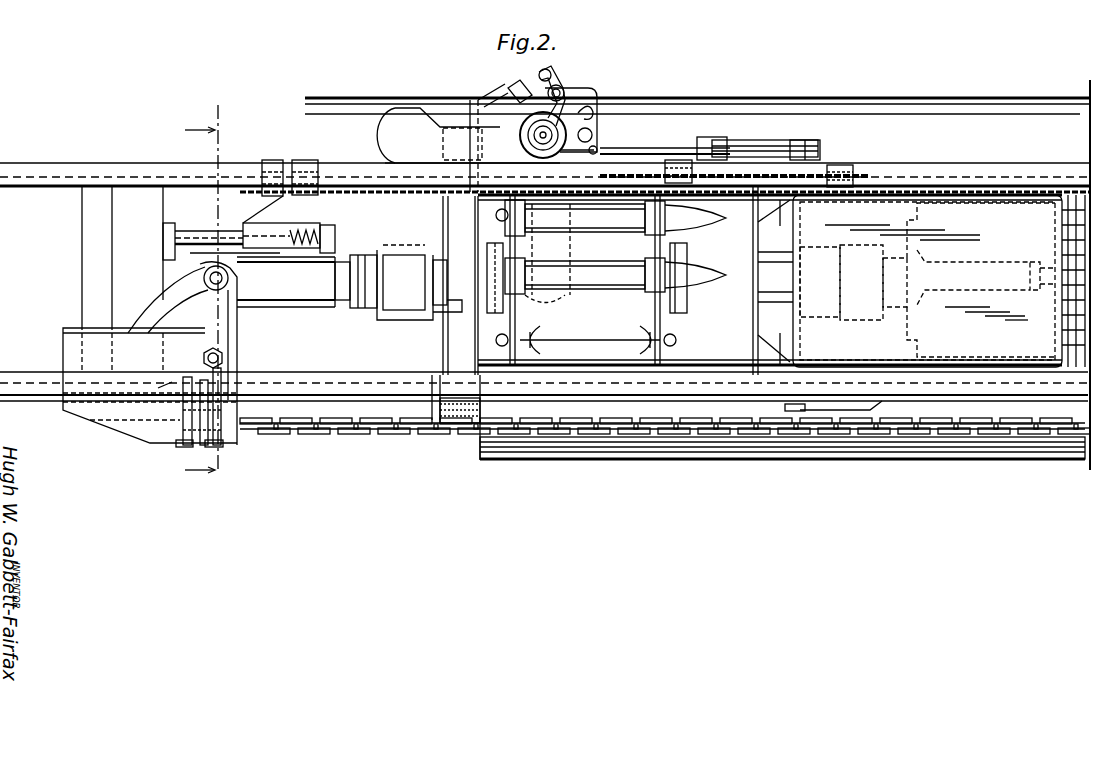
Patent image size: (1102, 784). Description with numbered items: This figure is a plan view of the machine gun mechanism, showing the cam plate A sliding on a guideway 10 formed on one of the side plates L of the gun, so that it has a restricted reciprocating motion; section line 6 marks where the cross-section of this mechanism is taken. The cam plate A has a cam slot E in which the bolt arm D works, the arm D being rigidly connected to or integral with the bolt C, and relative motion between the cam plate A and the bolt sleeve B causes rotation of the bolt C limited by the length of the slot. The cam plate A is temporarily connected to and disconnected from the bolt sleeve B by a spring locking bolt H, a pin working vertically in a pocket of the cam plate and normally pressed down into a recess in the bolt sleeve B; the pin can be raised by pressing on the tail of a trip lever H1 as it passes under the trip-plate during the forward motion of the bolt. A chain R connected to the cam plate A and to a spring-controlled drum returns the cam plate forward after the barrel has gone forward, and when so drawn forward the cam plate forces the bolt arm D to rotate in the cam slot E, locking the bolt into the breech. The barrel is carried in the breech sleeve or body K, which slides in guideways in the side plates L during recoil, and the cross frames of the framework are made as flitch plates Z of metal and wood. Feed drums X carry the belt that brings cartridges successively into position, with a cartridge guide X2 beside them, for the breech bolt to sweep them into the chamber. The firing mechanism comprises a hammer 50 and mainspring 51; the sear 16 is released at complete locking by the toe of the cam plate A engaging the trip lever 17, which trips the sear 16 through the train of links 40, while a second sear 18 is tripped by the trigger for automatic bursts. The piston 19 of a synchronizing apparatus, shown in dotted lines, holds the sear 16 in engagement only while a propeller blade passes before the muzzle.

The side plate L is at (101, 169).
The section line 6 is at (204, 278).
The cam slot E is at (187, 281).
The cam plate A is at (142, 360).
The arm D is at (230, 286).
The bolt sleeve B is at (290, 288).
The bolt C is at (410, 245).
The locking bolt H is at (228, 358).
The trip lever H1 is at (221, 415).
The guideway 10 is at (318, 402).
The chain R is at (385, 433).
The flitch plate Z is at (438, 352).
The sear 16 is at (555, 140).
The cartridge guide X2 is at (688, 250).
The breech sleeve K is at (939, 281).
The hammer 50 is at (397, 112).
The mainspring 51 is at (475, 108).
The second sear 18 is at (560, 113).
The piston 19 is at (600, 130).
The train of links 40 is at (745, 140).
The feed drum X is at (800, 120).
The trip lever 17 is at (798, 412).